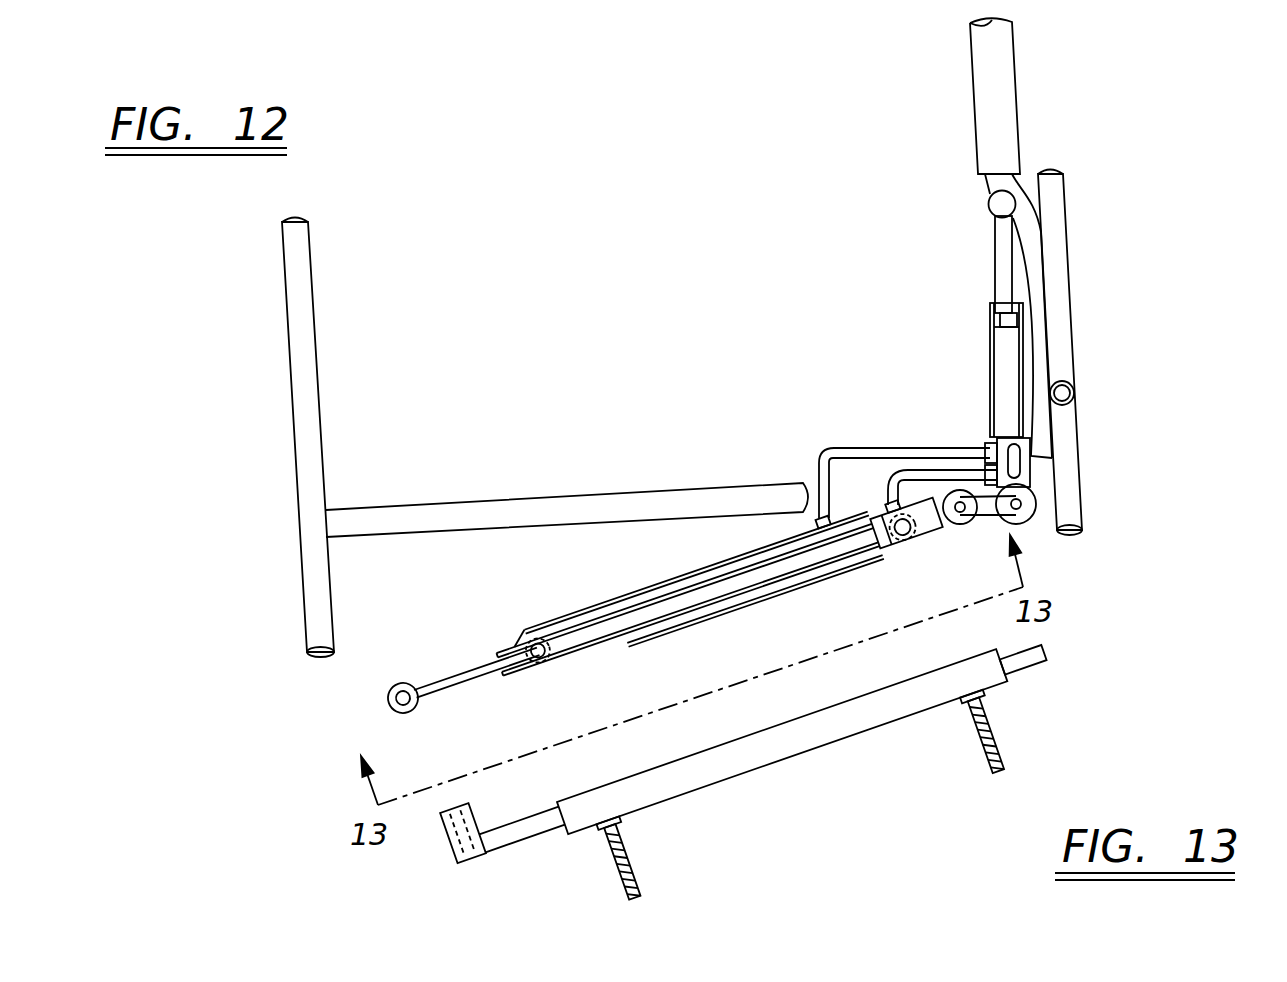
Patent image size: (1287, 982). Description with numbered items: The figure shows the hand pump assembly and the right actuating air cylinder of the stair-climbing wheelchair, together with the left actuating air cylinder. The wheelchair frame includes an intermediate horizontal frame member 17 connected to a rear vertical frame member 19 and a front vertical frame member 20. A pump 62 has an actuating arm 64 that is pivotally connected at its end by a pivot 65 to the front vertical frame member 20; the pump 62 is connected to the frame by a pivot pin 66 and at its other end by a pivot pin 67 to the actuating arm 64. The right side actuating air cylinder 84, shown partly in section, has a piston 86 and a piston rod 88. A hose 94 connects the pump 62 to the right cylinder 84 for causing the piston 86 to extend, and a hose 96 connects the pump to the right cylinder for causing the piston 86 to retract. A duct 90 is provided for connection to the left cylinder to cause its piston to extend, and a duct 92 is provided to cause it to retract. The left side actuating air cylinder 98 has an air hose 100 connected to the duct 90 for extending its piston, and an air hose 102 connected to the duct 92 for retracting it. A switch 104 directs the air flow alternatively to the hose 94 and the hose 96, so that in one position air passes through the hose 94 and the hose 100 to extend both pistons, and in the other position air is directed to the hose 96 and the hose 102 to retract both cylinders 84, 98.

In FIG. 12, the rear vertical frame member 19 is at (313, 333).
In FIG. 12, the intermediate horizontal frame member 17 is at (468, 510).
In FIG. 12, the right side actuating air cylinder 84 is at (557, 620).
In FIG. 12, the piston rod 88 is at (583, 644).
In FIG. 12, the duct 92 is at (533, 661).
In FIG. 12, the piston 86 is at (885, 547).
In FIG. 12, the duct 90 is at (913, 530).
In FIG. 12, the hose 96 is at (833, 445).
In FIG. 12, the hose 94 is at (909, 469).
In FIG. 12, the switch 104 is at (1030, 453).
In FIG. 12, the pump 62 is at (1003, 375).
In FIG. 12, the actuating arm 64 is at (1015, 78).
In FIG. 12, the pivot pin 67 is at (988, 207).
In FIG. 12, the front vertical frame member 20 is at (1083, 515).
In FIG. 12, the pivot 65 is at (1069, 388).
In FIG. 12, the pivot pin 66 is at (1020, 508).
In FIG. 13, the left side actuating air cylinder 98 is at (757, 790).
In FIG. 13, the air hose 100 is at (1003, 767).
In FIG. 13, the air hose 102 is at (642, 896).